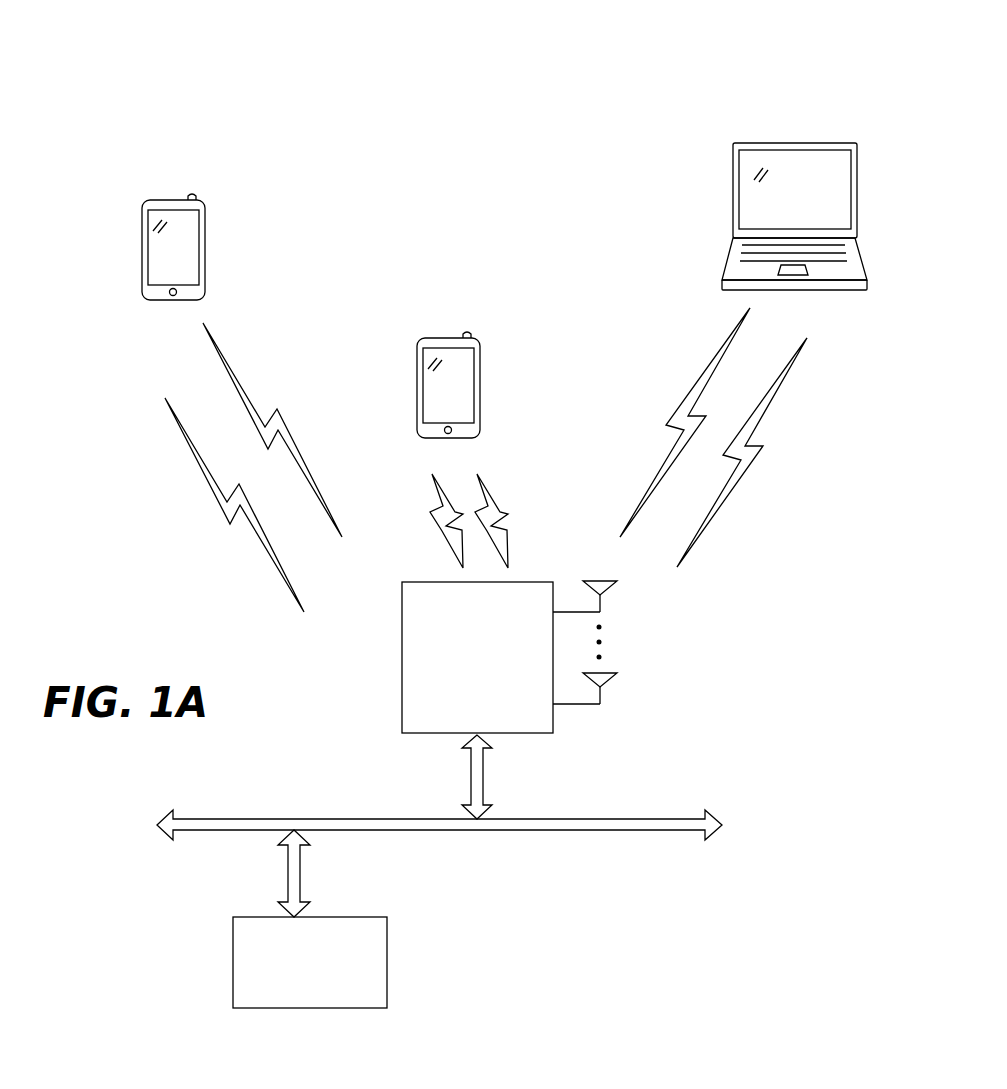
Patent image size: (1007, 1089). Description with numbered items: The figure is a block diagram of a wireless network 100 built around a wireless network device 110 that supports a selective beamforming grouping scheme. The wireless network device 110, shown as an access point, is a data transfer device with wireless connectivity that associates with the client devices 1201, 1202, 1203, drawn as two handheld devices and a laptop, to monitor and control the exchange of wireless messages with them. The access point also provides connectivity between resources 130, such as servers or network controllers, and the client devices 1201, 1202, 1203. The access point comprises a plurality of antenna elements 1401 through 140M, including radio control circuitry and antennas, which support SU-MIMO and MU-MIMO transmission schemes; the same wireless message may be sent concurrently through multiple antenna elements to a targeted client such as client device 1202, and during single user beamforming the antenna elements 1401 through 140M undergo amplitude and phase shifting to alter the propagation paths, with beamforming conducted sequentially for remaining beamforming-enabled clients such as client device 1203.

The wireless network 100 is at (289, 103).
The wireless network device 110 is at (477, 657).
The client device 1201 is at (480, 373).
The client device 1202 is at (733, 205).
The client device 1203 is at (207, 232).
The resources 130 is at (310, 962).
The antenna element 1401 is at (601, 598).
The antenna element 140M is at (601, 690).